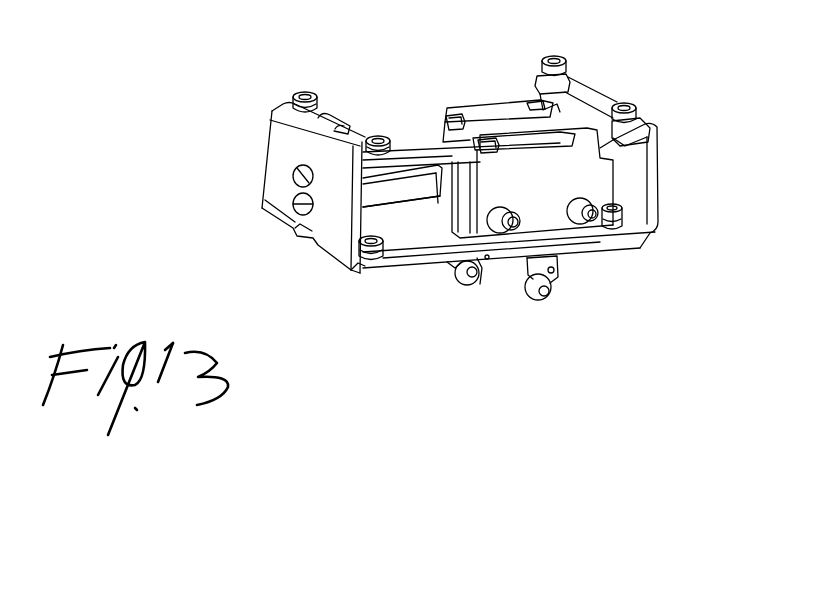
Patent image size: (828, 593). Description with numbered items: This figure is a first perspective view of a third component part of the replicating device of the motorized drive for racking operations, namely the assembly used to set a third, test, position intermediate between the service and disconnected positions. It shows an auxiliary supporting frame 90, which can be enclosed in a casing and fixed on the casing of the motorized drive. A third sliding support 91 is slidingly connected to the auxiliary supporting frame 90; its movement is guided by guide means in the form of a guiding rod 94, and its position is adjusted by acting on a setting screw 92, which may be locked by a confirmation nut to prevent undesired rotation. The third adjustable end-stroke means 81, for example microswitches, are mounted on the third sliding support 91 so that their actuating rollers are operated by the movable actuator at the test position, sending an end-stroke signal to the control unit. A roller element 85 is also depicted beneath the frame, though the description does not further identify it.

The third adjustable end-stroke means 81 is at (568, 162).
The roller wheel 85 is at (557, 289).
The auxiliary supporting frame 90 is at (658, 128).
The third sliding support 91 is at (445, 172).
The setting screw 92 is at (411, 153).
The guiding rod 94 is at (402, 188).